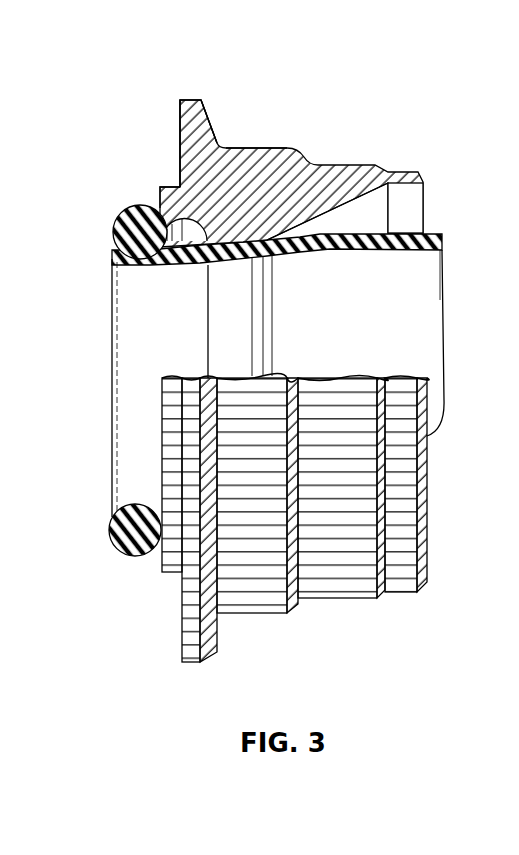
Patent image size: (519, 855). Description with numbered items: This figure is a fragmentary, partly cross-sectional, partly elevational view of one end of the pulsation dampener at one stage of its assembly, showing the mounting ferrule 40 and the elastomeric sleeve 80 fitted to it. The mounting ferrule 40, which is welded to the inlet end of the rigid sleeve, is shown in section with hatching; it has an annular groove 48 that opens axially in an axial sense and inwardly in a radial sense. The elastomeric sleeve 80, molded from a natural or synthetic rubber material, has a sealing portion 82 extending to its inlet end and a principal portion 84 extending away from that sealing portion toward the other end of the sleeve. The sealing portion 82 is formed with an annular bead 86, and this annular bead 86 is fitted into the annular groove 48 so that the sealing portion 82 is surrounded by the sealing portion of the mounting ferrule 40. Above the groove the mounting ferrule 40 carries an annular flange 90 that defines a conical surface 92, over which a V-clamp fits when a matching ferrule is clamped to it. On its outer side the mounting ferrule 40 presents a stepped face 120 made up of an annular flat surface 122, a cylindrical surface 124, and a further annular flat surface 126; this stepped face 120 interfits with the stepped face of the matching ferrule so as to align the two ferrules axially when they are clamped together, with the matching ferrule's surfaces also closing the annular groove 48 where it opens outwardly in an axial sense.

The mounting ferrule 40 is at (247, 148).
The annular groove 48 is at (263, 150).
The elastomeric sleeve 80 is at (346, 226).
The sealing portion 82 is at (173, 258).
The principal portion 84 is at (407, 252).
The annular bead 86 is at (130, 249).
The annular flange 90 is at (183, 98).
The conical surface 92 is at (208, 122).
The stepped face 120 is at (180, 120).
The annular flat surface 122 is at (180, 137).
The cylindrical surface 124 is at (178, 183).
The annular flat surface 126 is at (157, 192).